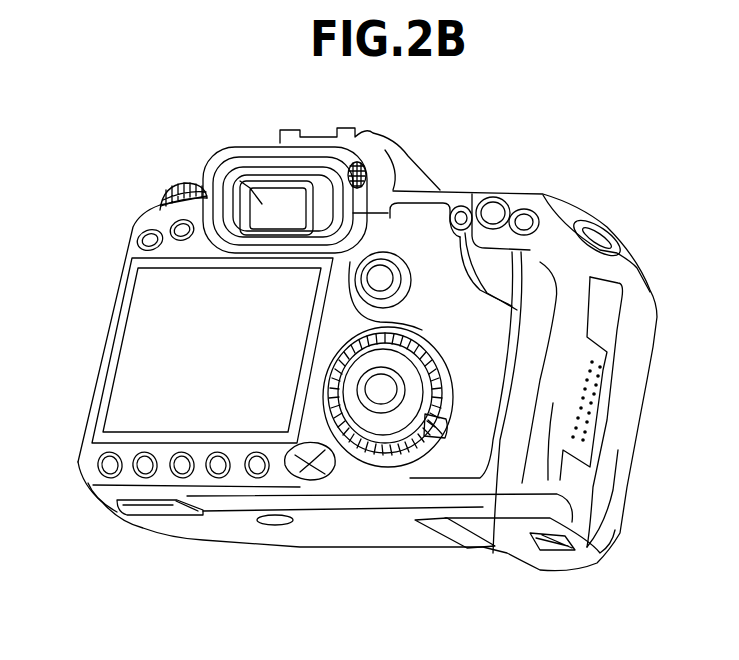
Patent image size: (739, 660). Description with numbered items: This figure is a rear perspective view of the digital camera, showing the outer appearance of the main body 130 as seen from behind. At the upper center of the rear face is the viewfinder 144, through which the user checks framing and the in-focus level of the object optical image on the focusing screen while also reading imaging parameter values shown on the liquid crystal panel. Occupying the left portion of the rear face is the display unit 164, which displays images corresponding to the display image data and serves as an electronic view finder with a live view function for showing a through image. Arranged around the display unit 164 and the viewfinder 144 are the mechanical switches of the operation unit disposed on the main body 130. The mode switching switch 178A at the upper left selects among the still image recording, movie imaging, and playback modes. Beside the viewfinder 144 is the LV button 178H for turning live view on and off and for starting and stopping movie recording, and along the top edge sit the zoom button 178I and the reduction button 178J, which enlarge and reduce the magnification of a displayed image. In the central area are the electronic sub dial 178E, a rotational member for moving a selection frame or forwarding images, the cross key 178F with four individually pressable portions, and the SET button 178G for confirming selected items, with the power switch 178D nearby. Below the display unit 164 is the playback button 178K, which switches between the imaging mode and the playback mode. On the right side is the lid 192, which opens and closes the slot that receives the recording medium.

The main body 130 is at (607, 204).
The viewfinder 144 is at (277, 218).
The display unit 164 is at (140, 323).
The mode switching switch 178A is at (180, 184).
The power switch 178D is at (310, 464).
The electronic sub dial 178E is at (366, 416).
The cross key 178F is at (380, 392).
The SET button 178G is at (432, 443).
The LV button 178H is at (370, 273).
The zoom button 178I is at (522, 220).
The reduction button 178J is at (490, 212).
The playback button 178K is at (250, 470).
The lid 192 is at (553, 403).